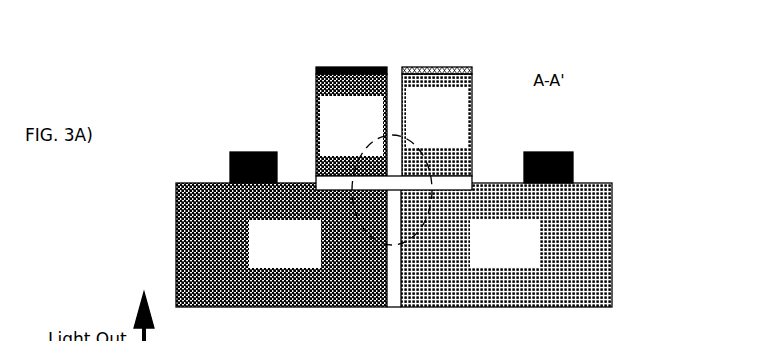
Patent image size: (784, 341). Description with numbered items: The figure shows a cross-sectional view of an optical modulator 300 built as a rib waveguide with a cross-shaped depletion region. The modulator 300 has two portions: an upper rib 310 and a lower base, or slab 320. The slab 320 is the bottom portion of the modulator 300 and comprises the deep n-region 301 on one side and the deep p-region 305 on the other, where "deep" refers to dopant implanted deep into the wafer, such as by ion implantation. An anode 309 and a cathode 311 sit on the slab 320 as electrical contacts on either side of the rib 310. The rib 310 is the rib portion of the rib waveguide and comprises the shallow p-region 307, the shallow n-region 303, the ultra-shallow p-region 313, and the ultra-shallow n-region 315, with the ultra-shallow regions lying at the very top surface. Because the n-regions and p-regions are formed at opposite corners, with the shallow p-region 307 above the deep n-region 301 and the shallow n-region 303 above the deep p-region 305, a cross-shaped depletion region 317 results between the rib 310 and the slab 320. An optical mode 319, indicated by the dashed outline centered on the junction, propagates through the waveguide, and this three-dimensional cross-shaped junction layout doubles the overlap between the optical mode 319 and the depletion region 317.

The modulator 300 is at (163, 94).
The deep n-region 301 is at (271, 267).
The shallow n-region 303 is at (425, 145).
The deep p-region 305 is at (488, 267).
The shallow p-region 307 is at (339, 154).
The anode 309 is at (237, 152).
The rib 310 is at (496, 102).
The cathode 311 is at (556, 152).
The ultra-shallow p-region 313 is at (327, 67).
The ultra-shallow n-region 315 is at (452, 67).
The cross-shaped depletion region 317 is at (462, 184).
The optical mode 319 is at (411, 240).
The slab 320 is at (450, 245).